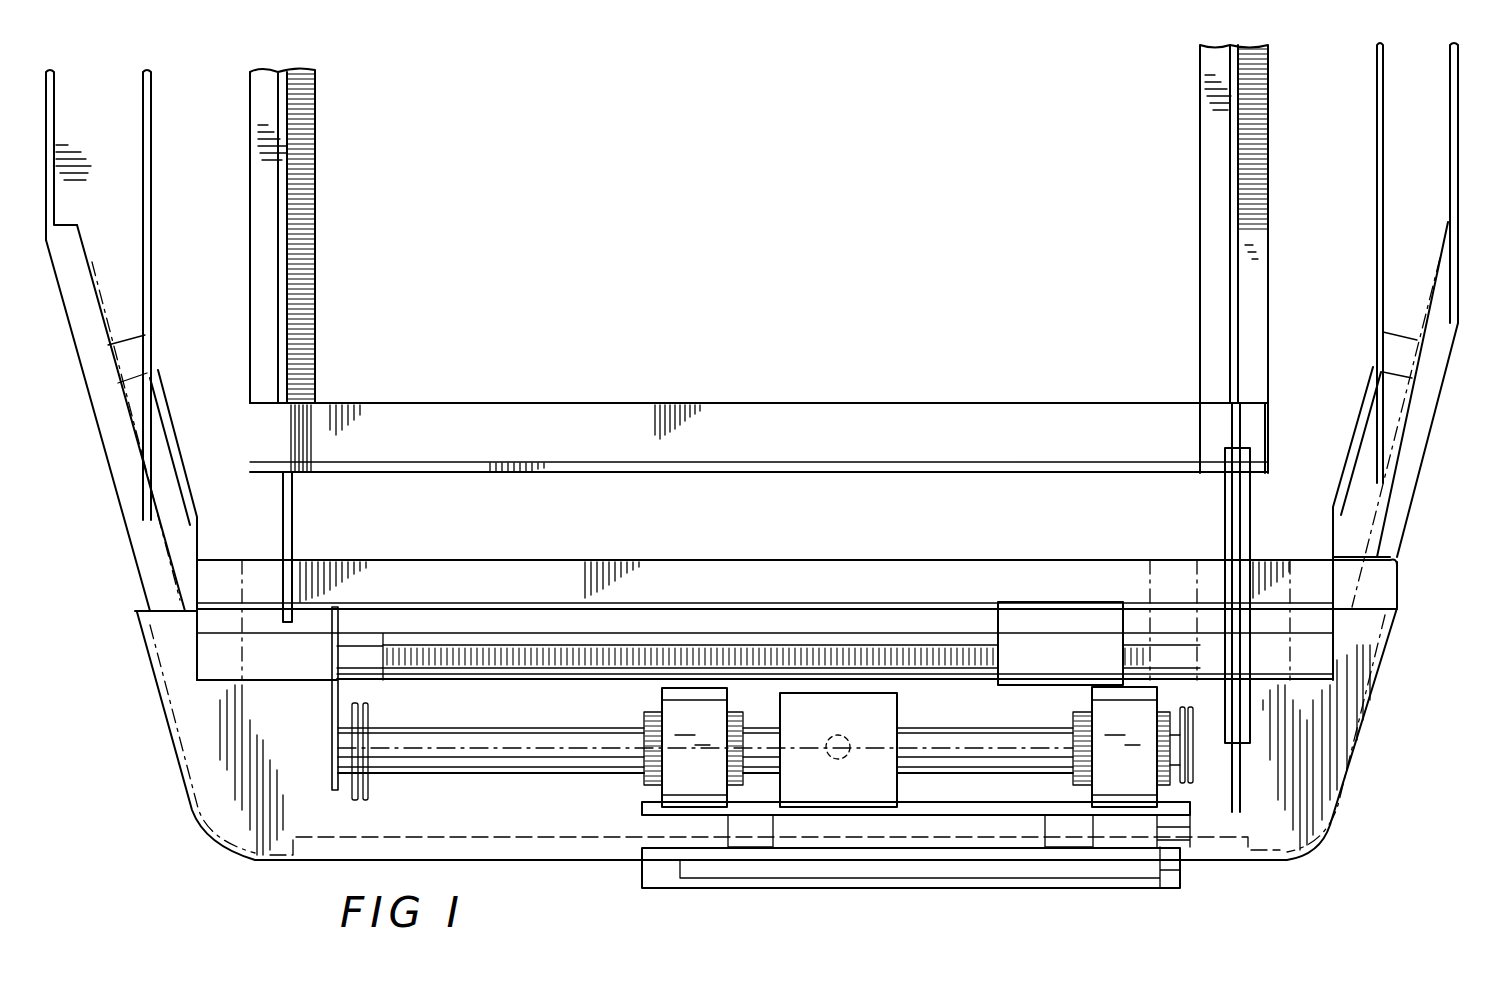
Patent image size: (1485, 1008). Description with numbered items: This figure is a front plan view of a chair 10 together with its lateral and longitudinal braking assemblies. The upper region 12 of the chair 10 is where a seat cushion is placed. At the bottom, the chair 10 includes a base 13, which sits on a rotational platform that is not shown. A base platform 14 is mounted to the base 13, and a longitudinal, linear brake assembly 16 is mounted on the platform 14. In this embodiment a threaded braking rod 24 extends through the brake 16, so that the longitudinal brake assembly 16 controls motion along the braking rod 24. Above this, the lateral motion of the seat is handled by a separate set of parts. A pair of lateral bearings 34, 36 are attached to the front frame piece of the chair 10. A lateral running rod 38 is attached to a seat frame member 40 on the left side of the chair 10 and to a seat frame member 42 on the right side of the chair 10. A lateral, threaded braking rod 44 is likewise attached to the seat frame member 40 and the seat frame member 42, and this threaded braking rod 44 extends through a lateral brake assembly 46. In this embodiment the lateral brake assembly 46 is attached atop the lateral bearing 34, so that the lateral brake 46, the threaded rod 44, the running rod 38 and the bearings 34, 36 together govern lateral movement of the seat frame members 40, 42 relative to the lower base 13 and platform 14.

The chair 10 is at (1376, 815).
The region 12 is at (674, 392).
The base 13 is at (1076, 890).
The base platform 14 is at (642, 807).
The longitudinal, linear brake assembly 16 is at (897, 700).
The threaded braking rod 24 is at (843, 760).
The lateral bearing 34 is at (1090, 712).
The lateral bearing 36 is at (660, 705).
The lateral running rod 38 is at (425, 775).
The seat frame member 40 is at (332, 722).
The seat frame member 42 is at (1193, 785).
The lateral, threaded braking rod 44 is at (746, 645).
The lateral brake assembly 46 is at (1062, 602).